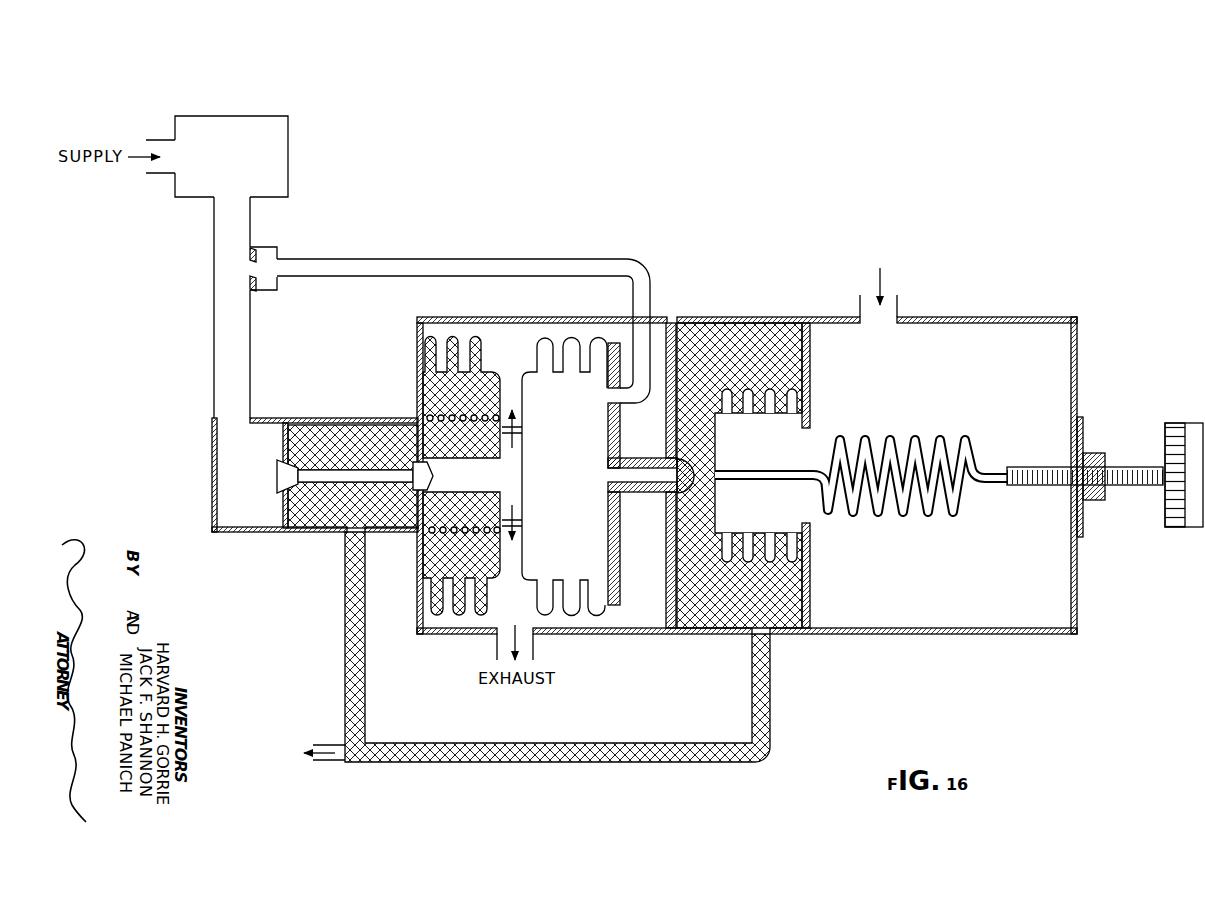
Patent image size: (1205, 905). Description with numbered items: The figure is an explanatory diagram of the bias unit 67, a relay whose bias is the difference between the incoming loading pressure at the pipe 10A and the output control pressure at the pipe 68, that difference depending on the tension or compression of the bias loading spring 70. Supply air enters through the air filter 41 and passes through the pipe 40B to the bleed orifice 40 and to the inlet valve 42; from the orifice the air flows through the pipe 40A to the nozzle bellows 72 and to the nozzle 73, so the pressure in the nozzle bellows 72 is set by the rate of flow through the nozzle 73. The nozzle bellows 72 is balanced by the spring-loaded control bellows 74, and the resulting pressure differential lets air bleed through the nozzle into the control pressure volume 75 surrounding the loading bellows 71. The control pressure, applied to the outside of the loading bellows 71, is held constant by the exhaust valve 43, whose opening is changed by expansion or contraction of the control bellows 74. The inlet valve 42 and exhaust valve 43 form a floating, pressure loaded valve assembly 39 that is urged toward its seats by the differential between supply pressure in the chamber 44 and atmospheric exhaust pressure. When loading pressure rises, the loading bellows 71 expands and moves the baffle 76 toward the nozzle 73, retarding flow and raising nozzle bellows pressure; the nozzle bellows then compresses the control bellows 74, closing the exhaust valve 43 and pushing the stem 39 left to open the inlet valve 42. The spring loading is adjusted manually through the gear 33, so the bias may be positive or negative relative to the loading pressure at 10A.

The air filter 41 is at (238, 176).
The bleed orifice 40 is at (244, 272).
The pipe 40A is at (333, 278).
The pipe 40B is at (214, 350).
The inlet valve 42 is at (274, 466).
The valve stem 39 is at (355, 475).
The exhaust valve 43 is at (404, 454).
The chamber 44 is at (315, 475).
The control bellows 74 is at (450, 318).
The nozzle bellows 72 is at (542, 318).
The nozzle 73 is at (604, 479).
The baffle 76 is at (688, 467).
The control pressure volume 75 is at (739, 475).
The loading bellows 71 is at (779, 570).
The bias loading spring 70 is at (953, 522).
The bias unit 67 is at (1004, 316).
The gear 33 is at (1181, 422).
The pipe 68 is at (347, 764).
The pipe 10A is at (925, 283).